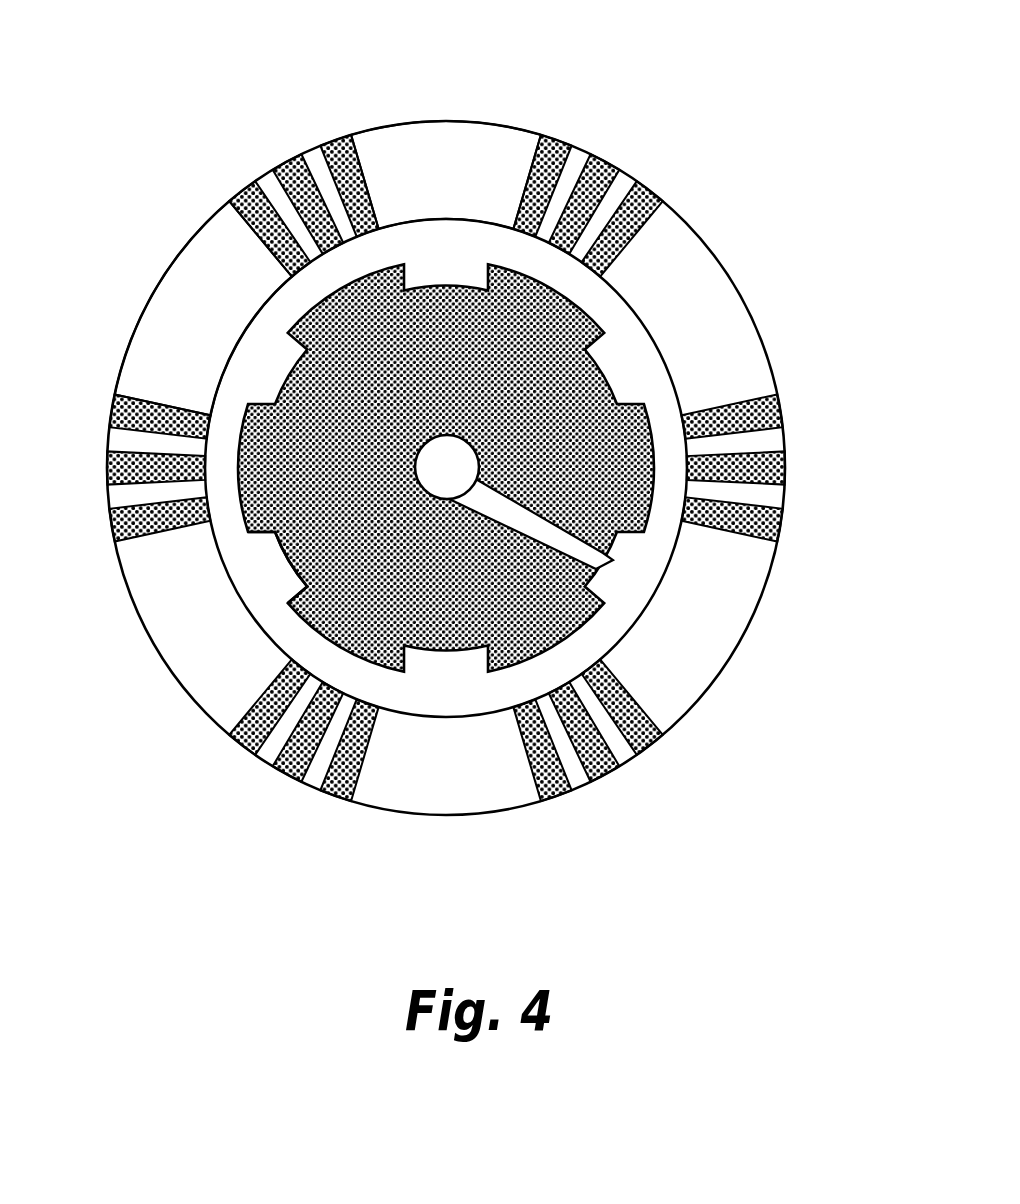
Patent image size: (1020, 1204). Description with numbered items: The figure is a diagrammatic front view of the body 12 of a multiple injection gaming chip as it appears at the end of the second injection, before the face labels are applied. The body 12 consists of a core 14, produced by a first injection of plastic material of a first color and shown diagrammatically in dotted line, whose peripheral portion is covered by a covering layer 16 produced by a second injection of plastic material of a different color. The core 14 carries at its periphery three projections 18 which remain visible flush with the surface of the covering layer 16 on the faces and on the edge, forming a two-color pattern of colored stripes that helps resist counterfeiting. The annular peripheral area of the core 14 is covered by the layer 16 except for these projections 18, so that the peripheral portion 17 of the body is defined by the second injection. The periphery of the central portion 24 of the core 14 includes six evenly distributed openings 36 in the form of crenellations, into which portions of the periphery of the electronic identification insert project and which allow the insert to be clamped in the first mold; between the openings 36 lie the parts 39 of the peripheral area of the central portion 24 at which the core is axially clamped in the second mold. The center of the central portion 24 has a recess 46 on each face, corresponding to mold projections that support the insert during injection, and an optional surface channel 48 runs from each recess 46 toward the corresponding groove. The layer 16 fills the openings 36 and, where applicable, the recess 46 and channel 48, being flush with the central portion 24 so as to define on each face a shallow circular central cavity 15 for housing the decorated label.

The body 12 is at (751, 250).
The core 14 is at (634, 160).
The central cavity 15 is at (648, 375).
The covering layer 16 is at (216, 337).
The peripheral portion 17 is at (452, 147).
The projections 18 is at (787, 533).
The central portion 24 is at (367, 577).
The openings 36 is at (290, 558).
The parts of the peripheral area 39 is at (358, 283).
The recess 46 is at (458, 503).
The surface channel 48 is at (598, 559).